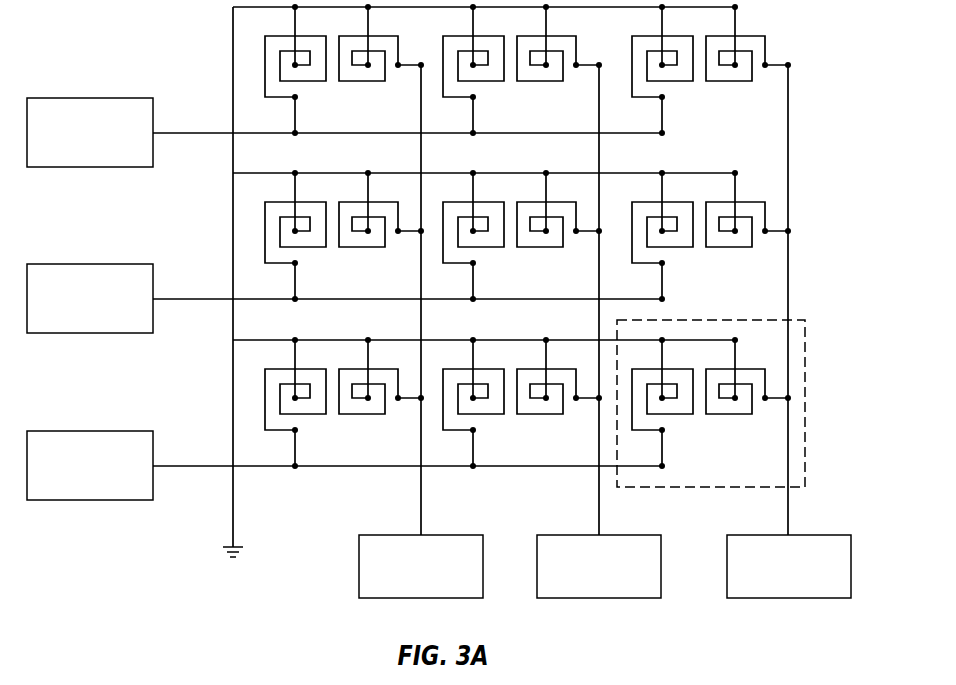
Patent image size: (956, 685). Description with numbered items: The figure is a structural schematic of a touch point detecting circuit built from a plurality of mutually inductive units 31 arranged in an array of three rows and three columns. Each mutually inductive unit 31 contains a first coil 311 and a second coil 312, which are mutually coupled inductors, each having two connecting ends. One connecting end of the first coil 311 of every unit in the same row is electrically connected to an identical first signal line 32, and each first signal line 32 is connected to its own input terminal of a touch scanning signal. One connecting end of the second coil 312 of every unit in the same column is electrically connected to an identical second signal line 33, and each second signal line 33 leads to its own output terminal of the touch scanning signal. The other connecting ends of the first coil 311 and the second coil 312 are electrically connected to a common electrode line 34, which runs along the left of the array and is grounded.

The mutually inductive unit 31 is at (733, 320).
The first coil 311 is at (687, 415).
The second coil 312 is at (745, 415).
The first signal line 32 is at (213, 134).
The second signal line 33 is at (421, 523).
The common electrode line 34 is at (233, 50).